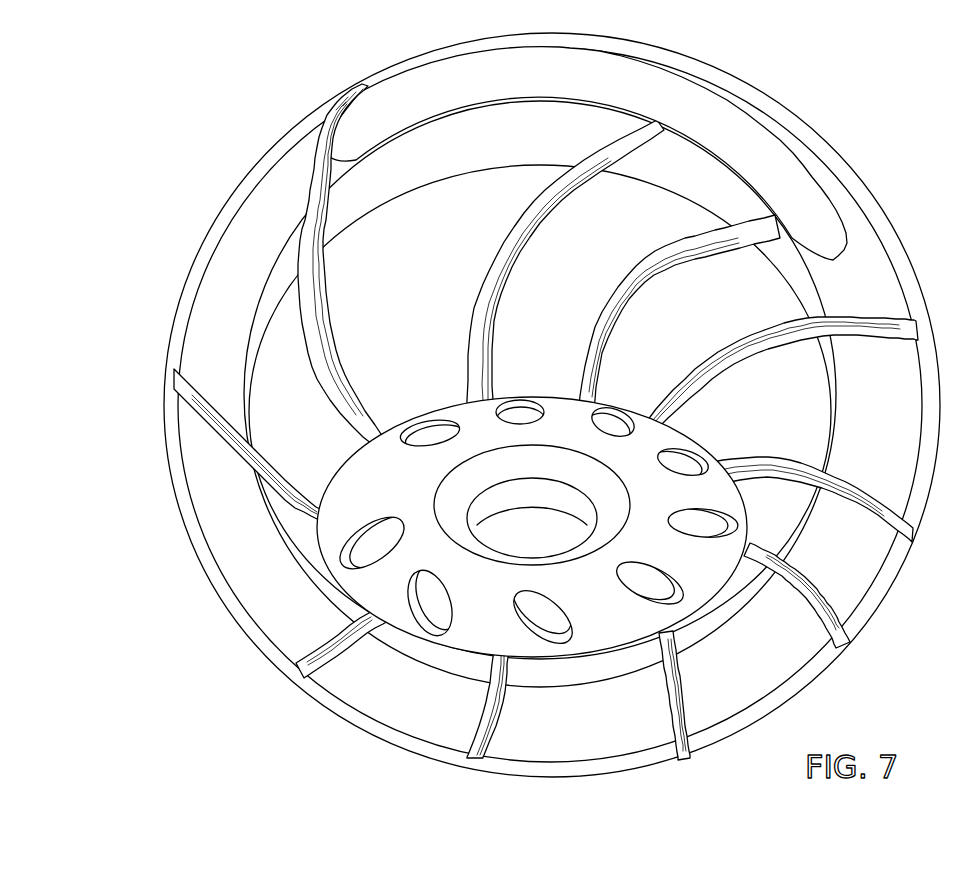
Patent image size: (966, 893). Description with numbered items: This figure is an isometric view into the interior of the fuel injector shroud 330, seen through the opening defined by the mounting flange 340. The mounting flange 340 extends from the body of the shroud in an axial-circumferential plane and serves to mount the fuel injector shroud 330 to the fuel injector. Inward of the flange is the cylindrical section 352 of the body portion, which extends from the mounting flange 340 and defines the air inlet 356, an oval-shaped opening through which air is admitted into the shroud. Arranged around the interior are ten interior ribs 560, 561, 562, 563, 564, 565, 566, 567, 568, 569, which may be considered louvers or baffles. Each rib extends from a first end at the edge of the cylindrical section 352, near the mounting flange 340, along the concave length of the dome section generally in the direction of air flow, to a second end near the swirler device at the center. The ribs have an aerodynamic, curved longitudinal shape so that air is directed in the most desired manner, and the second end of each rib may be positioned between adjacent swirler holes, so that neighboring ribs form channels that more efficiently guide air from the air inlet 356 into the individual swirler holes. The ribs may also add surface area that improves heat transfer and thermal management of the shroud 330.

The fuel injector shroud 330 is at (529, 400).
The mounting flange 340 is at (185, 292).
The cylindrical section 352 is at (820, 163).
The air inlet 356 is at (655, 87).
The interior rib 560 is at (472, 288).
The interior rib 561 is at (330, 326).
The interior rib 562 is at (298, 490).
The interior rib 563 is at (786, 463).
The interior rib 564 is at (744, 355).
The interior rib 565 is at (652, 272).
The interior rib 566 is at (320, 652).
The interior rib 567 is at (488, 704).
The interior rib 568 is at (668, 702).
The interior rib 569 is at (822, 624).